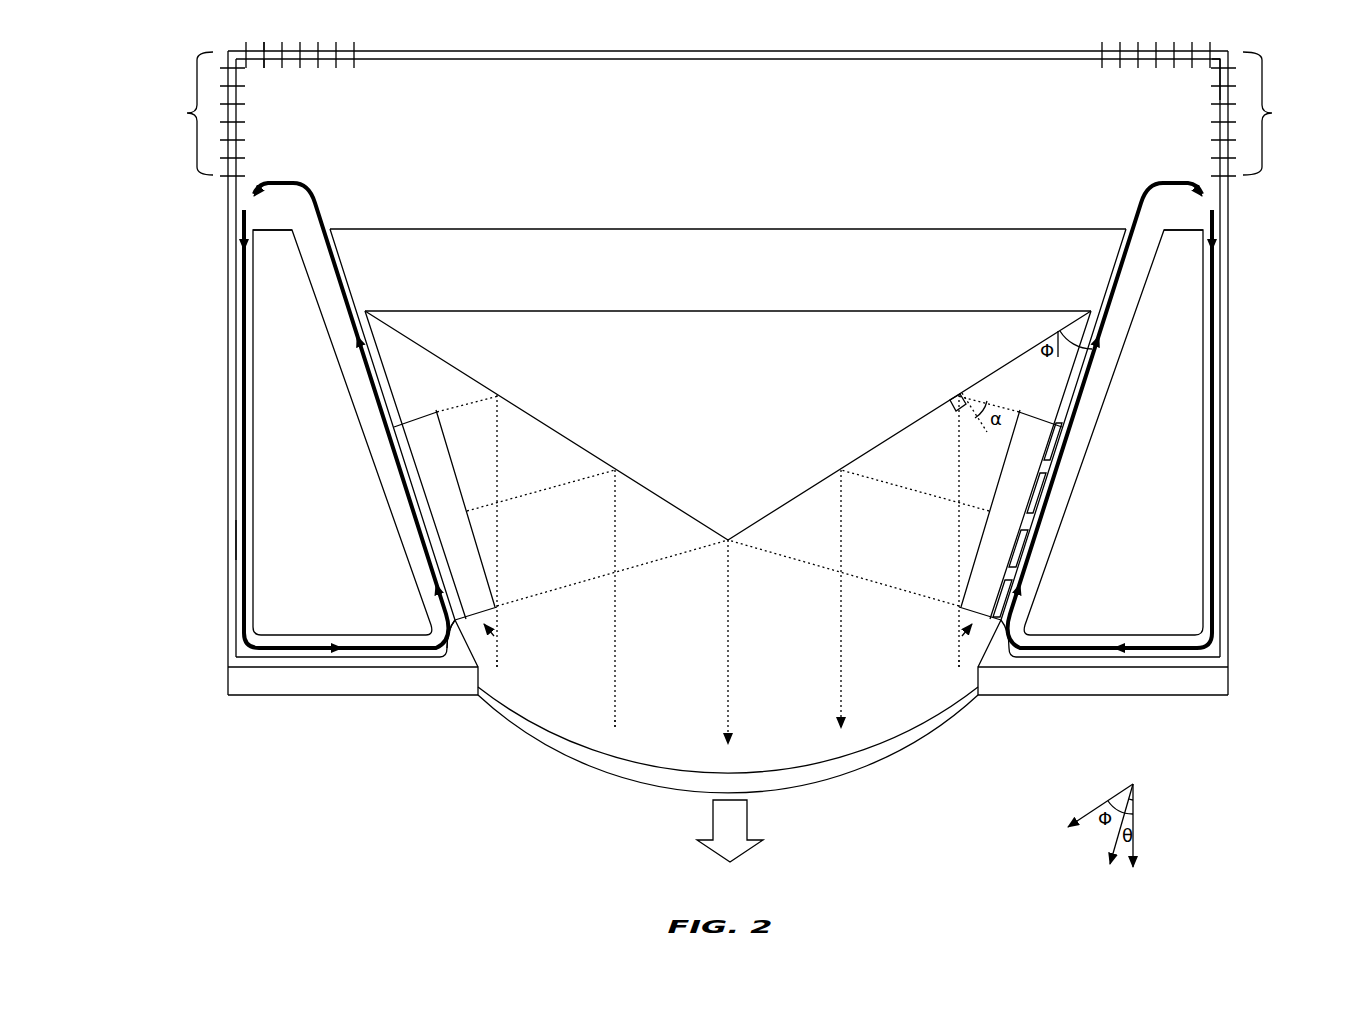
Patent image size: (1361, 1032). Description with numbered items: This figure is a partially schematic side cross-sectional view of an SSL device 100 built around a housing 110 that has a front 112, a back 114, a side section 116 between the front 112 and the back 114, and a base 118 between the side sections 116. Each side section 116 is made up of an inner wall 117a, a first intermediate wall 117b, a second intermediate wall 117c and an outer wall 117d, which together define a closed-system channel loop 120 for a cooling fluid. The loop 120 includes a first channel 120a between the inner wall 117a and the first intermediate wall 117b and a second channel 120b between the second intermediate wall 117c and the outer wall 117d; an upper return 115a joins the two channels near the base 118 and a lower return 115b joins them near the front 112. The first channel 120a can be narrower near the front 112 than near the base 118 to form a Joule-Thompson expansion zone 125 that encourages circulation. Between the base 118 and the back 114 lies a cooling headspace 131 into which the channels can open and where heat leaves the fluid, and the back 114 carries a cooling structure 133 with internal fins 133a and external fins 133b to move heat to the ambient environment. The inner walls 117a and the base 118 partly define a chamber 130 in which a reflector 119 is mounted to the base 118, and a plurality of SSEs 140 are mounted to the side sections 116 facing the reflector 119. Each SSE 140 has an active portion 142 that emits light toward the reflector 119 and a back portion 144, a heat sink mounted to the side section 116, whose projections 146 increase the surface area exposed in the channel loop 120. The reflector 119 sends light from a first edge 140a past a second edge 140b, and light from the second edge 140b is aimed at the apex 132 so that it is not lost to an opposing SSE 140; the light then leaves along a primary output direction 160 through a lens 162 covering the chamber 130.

The SSL device 100 is at (421, 797).
The housing 110 is at (203, 597).
The front 112 is at (340, 697).
The back 114 is at (918, 50).
The upper return 115a is at (283, 195).
The lower return 115b is at (300, 656).
The side section 116 is at (305, 573).
The inner wall 117a is at (370, 348).
The first intermediate wall 117b is at (300, 250).
The second intermediate wall 117c is at (252, 512).
The outer wall 117d is at (240, 468).
The base 118 is at (630, 256).
The reflector 119 is at (757, 502).
The closed-system channel loop 120 is at (1217, 370).
The first channel 120a is at (1235, 262).
The second channel 120b is at (250, 545).
The Joule-Thompson expansion zone 125 is at (352, 421).
The chamber 130 is at (661, 658).
The cooling headspace 131 is at (802, 88).
The apex 132 is at (725, 545).
The cooling structure 133 is at (727, 109).
The internal fins 133a is at (265, 63).
The external fins 133b is at (265, 52).
The SSEs 140 is at (447, 500).
The first edge 140a is at (437, 412).
The second edge 140b is at (497, 606).
The active portion 142 is at (495, 637).
The back portion 144 is at (455, 630).
The projections 146 is at (1025, 585).
The primary output direction 160 is at (740, 852).
The lens 162 is at (585, 765).